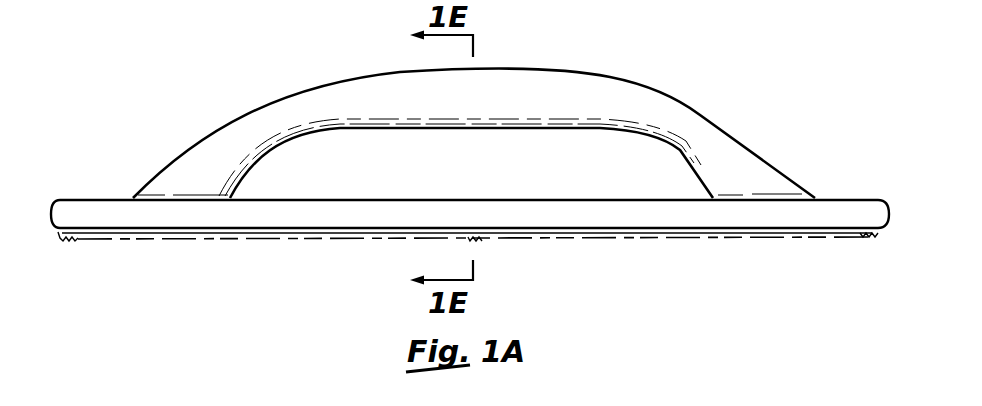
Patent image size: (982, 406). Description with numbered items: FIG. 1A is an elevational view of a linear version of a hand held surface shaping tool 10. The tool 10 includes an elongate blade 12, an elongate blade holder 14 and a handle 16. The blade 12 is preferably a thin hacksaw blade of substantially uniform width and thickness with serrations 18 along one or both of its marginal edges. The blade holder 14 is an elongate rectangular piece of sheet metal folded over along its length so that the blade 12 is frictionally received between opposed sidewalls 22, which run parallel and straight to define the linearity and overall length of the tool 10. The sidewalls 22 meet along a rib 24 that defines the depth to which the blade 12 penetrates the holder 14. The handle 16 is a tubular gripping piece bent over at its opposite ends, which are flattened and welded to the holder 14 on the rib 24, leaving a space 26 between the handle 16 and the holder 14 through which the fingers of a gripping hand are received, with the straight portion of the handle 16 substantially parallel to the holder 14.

The tool 10 is at (663, 77).
The elongate blade 12 is at (870, 238).
The elongate blade holder 14 is at (838, 198).
The handle 16 is at (708, 128).
The serrations 18 is at (725, 238).
The sidewalls 22 is at (292, 213).
The rib 24 is at (400, 198).
The space 26 is at (325, 158).